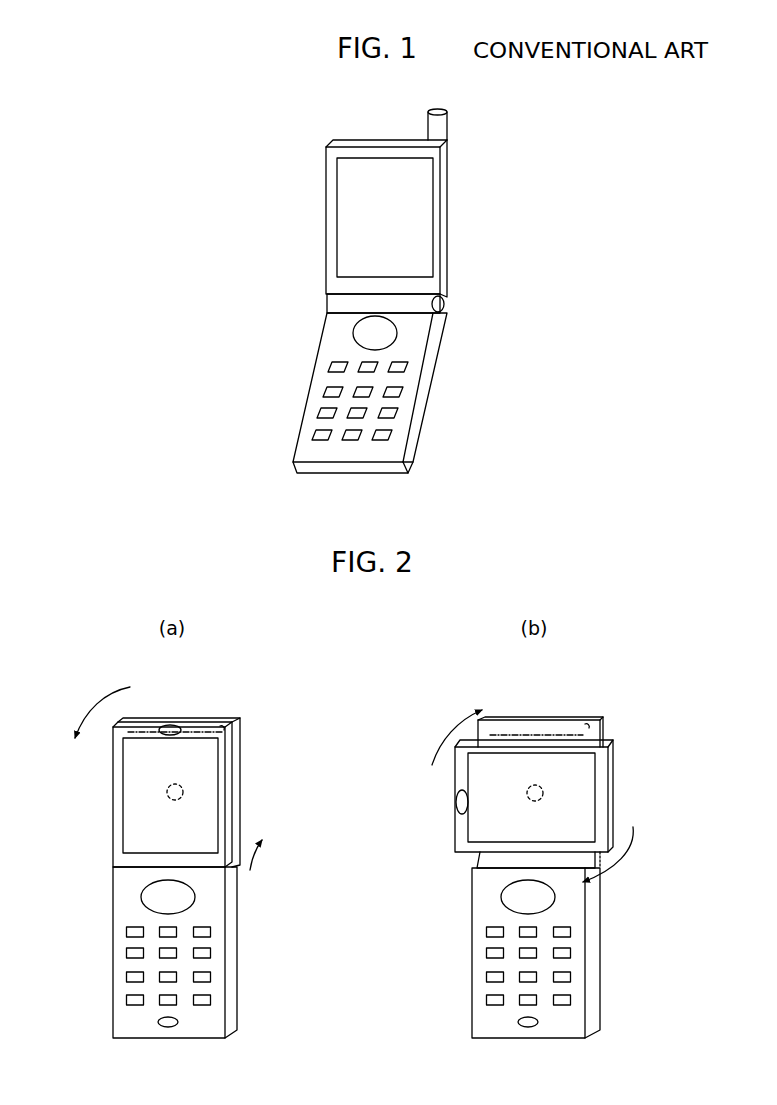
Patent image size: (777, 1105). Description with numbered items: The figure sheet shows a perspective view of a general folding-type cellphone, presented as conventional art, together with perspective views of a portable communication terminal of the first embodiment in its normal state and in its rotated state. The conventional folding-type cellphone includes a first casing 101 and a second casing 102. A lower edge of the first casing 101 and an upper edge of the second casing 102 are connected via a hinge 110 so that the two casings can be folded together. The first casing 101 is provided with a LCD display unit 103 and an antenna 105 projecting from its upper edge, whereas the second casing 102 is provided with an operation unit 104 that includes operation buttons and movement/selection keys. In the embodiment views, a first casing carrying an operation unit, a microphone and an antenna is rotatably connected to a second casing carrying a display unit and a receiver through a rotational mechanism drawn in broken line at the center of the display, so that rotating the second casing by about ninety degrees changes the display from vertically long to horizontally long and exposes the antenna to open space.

The first casing 101 is at (442, 218).
The second casing 102 is at (413, 443).
The LCD display unit 103 is at (337, 210).
The operation unit 104 is at (355, 335).
The antenna 105 is at (445, 127).
The hinge 110 is at (330, 305).